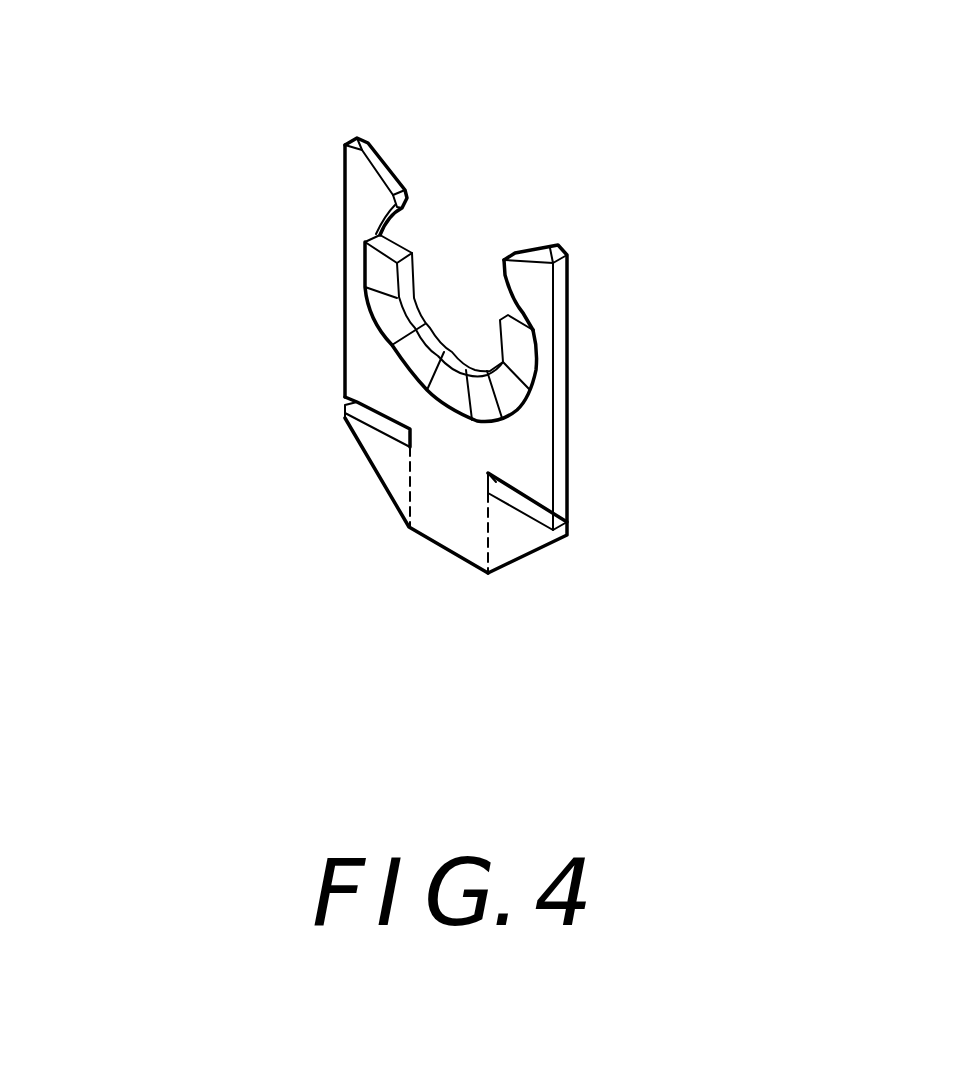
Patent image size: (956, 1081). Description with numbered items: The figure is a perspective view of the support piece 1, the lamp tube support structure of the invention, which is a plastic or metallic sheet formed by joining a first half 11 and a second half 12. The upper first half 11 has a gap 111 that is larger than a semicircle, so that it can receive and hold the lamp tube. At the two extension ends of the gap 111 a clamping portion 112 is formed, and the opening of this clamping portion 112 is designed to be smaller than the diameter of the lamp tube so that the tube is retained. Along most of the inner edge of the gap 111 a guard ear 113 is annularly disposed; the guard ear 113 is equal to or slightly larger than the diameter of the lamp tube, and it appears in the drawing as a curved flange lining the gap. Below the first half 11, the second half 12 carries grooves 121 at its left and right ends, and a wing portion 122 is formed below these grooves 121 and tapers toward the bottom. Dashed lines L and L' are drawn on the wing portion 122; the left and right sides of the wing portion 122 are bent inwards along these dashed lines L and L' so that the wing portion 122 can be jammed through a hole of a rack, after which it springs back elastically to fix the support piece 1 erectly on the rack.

The support piece 1 is at (218, 273).
The first half 11 is at (337, 258).
The gap 111 is at (402, 213).
The clamping portion 112 is at (358, 187).
The guard ear 113 is at (392, 312).
The second half 12 is at (470, 573).
The grooves 121 is at (568, 527).
The wing portion 122 is at (452, 532).
The dashed line L is at (346, 496).
The dashed line L' is at (530, 592).